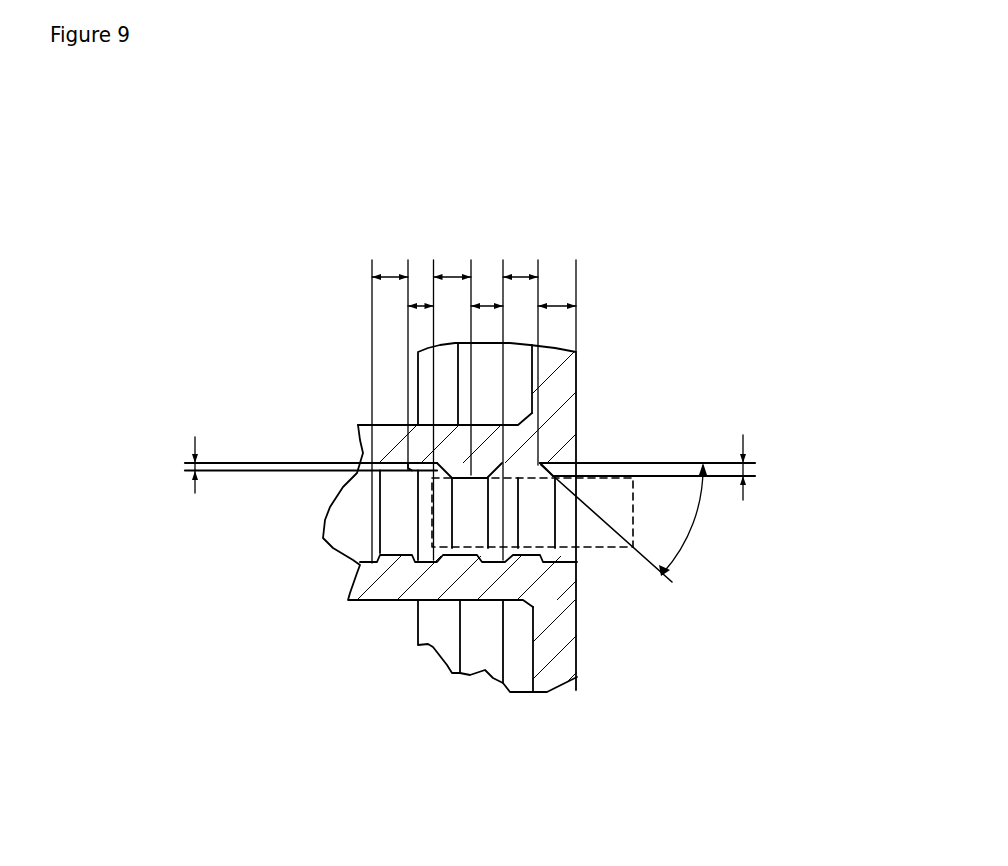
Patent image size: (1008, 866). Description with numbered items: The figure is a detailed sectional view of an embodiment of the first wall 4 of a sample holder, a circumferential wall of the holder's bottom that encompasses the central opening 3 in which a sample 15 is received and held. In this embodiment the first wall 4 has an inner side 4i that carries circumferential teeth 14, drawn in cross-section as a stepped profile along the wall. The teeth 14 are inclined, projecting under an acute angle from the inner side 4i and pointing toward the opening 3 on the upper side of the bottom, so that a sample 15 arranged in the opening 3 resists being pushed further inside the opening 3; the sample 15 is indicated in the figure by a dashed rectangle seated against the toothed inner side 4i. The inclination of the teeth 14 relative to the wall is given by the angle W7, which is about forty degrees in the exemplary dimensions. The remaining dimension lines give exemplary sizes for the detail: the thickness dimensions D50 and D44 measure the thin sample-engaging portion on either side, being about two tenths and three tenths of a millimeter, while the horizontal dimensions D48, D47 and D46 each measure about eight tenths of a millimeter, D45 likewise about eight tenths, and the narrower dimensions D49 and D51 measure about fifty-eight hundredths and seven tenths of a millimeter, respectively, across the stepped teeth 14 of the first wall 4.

The opening 3 is at (577, 530).
The first wall 4 is at (380, 592).
The inner side 4i is at (418, 600).
The circumferential teeth 14 is at (537, 555).
The sample 15 is at (635, 502).
The angle W7 is at (688, 533).
The dimension D44 is at (757, 470).
The dimension D45 is at (578, 305).
The dimension D46 is at (523, 275).
The dimension D47 is at (453, 275).
The dimension D48 is at (391, 275).
The dimension D49 is at (410, 306).
The dimension D50 is at (187, 467).
The dimension D51 is at (487, 308).